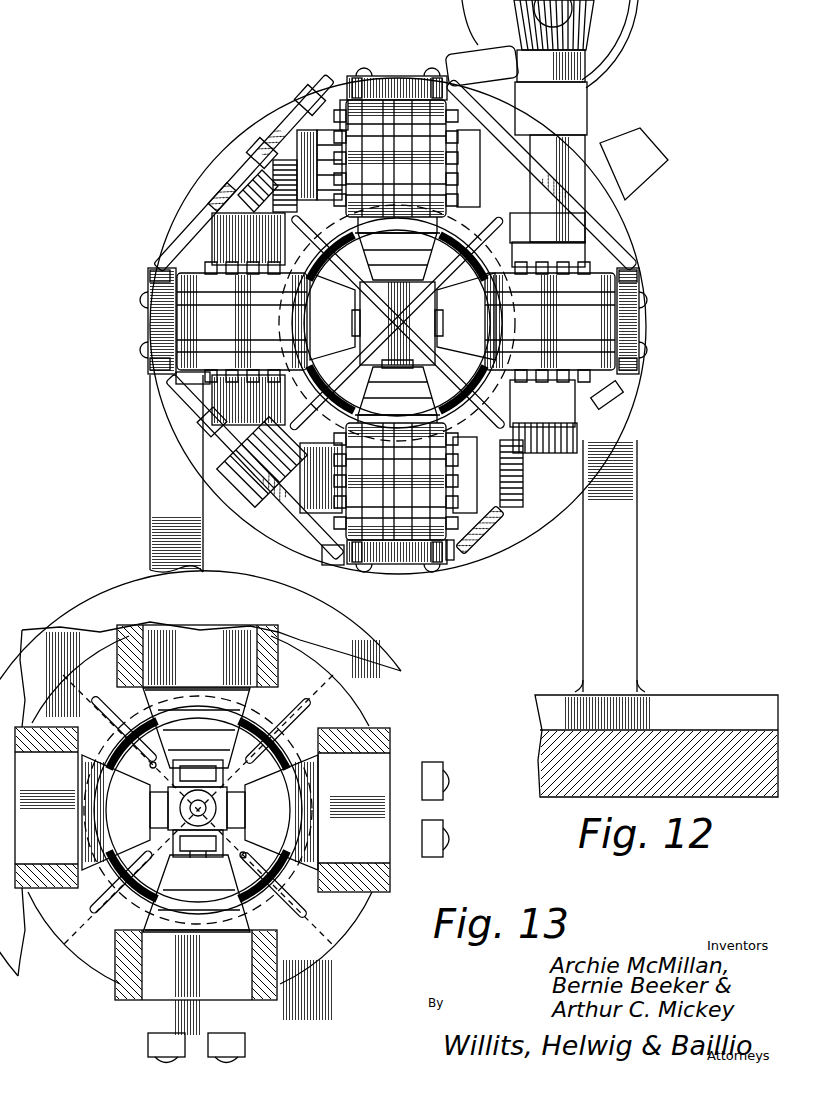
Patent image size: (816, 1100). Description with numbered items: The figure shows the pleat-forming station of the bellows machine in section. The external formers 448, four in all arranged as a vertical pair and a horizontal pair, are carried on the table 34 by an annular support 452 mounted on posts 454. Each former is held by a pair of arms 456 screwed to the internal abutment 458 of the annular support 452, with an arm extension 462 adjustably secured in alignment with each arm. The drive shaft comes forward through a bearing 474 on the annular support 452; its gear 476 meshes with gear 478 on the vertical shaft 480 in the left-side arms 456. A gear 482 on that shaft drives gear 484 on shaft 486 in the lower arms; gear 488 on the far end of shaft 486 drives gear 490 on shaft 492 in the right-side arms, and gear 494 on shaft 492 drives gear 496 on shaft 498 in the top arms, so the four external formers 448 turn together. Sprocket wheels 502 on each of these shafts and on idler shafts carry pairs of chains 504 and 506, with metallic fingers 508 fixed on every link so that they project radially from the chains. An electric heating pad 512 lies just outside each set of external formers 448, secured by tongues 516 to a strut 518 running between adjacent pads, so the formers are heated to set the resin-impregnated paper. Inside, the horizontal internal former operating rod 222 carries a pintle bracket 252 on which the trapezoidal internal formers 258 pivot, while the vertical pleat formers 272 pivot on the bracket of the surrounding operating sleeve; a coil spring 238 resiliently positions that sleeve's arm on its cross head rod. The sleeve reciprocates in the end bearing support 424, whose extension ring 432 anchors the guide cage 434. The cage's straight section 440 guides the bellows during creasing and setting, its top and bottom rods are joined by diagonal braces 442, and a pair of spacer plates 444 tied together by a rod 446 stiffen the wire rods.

In FIG. 12, the table 34 is at (700, 745).
In FIG. 13, the horizontal internal former operating rod 222 is at (196, 805).
In FIG. 12, the coil spring 238 is at (322, 282).
In FIG. 13, the pintle bracket 252 is at (192, 857).
In FIG. 13, the trapezoidal shaped internal formers 258 is at (100, 790).
In FIG. 12, the vertical pleat formers 272 is at (402, 250).
In FIG. 13, the vertical pleat formers 272 is at (160, 700).
In FIG. 12, the end bearing support 424 is at (320, 390).
In FIG. 13, the end bearing support 424 is at (242, 833).
In FIG. 12, the extension ring 432 is at (486, 226).
In FIG. 13, the extension ring 432 is at (130, 892).
In FIG. 12, the guide cage 434 is at (504, 245).
In FIG. 13, the guide cage 434 is at (93, 716).
In FIG. 13, the straight section 440 is at (246, 853).
In FIG. 12, the diagonal braces 442 is at (443, 318).
In FIG. 12, the spacer plates 444 is at (396, 380).
In FIG. 12, the rod 446 is at (355, 333).
In FIG. 12, the external formers 448 is at (440, 82).
In FIG. 12, the annular support 452 is at (180, 222).
In FIG. 13, the annular support 452 is at (60, 1000).
In FIG. 12, the posts 454 is at (640, 515).
In FIG. 13, the arms 456 is at (270, 650).
In FIG. 13, the internal abutment 458 is at (380, 870).
In FIG. 12, the arm extension 462 is at (490, 527).
In FIG. 12, the bearing 474 is at (590, 135).
In FIG. 12, the gear 476 is at (632, 22).
In FIG. 12, the gear 478 is at (530, 28).
In FIG. 12, the vertical shaft 480 is at (600, 195).
In FIG. 12, the gear 482 is at (620, 440).
In FIG. 12, the gear 484 is at (538, 470).
In FIG. 12, the shaft 486 is at (330, 560).
In FIG. 12, the gear 488 is at (275, 502).
In FIG. 12, the gear 490 is at (210, 436).
In FIG. 12, the shaft 492 is at (180, 395).
In FIG. 12, the gear 494 is at (258, 156).
In FIG. 12, the gear 496 is at (302, 104).
In FIG. 12, the shaft 498 is at (286, 130).
In FIG. 12, the sprocket wheels 502 is at (340, 106).
In FIG. 12, the chain 504 is at (360, 95).
In FIG. 12, the chain 506 is at (210, 240).
In FIG. 12, the metallic fingers 508 is at (475, 170).
In FIG. 12, the electric heating pad 512 is at (635, 270).
In FIG. 12, the tongues 516 is at (396, 78).
In FIG. 12, the strut 518 is at (216, 200).